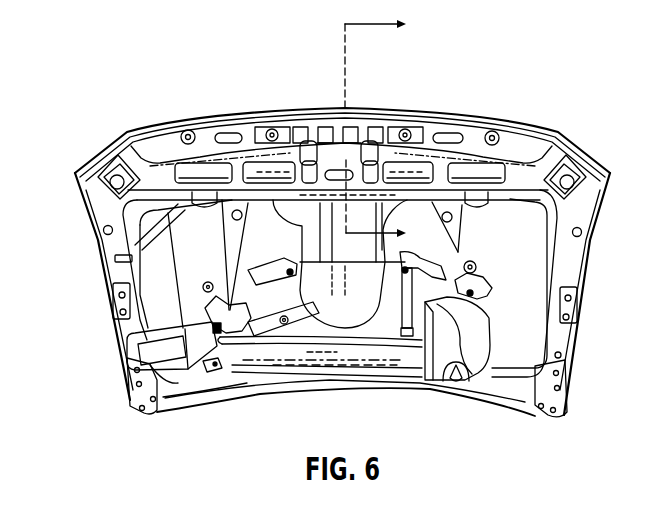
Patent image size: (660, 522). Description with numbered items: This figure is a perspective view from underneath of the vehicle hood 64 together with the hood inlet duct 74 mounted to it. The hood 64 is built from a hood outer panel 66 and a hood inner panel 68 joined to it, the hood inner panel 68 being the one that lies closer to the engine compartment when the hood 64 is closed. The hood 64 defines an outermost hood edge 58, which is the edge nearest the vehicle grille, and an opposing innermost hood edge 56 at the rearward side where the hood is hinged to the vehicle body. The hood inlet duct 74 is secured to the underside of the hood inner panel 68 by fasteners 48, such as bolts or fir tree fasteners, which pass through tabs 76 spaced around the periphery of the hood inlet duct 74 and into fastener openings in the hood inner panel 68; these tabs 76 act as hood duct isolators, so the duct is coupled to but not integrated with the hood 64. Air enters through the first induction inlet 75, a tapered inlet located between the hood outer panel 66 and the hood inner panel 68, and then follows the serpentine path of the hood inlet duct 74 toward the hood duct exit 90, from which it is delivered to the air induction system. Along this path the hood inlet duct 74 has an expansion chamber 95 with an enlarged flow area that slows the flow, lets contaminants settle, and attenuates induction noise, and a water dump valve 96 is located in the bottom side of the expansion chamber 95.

The fasteners 48 is at (220, 315).
The innermost hood edge 56 is at (173, 410).
The outermost hood edge 58 is at (247, 115).
The hood 64 is at (492, 120).
The hood outer panel 66 is at (387, 112).
The hood inner panel 68 is at (500, 238).
The hood inlet duct 74 is at (307, 223).
The first induction inlet 75 is at (413, 172).
The tabs 76 is at (217, 327).
The hood duct exit 90 is at (127, 360).
The expansion chamber 95 is at (552, 385).
The water dump valve 96 is at (462, 384).